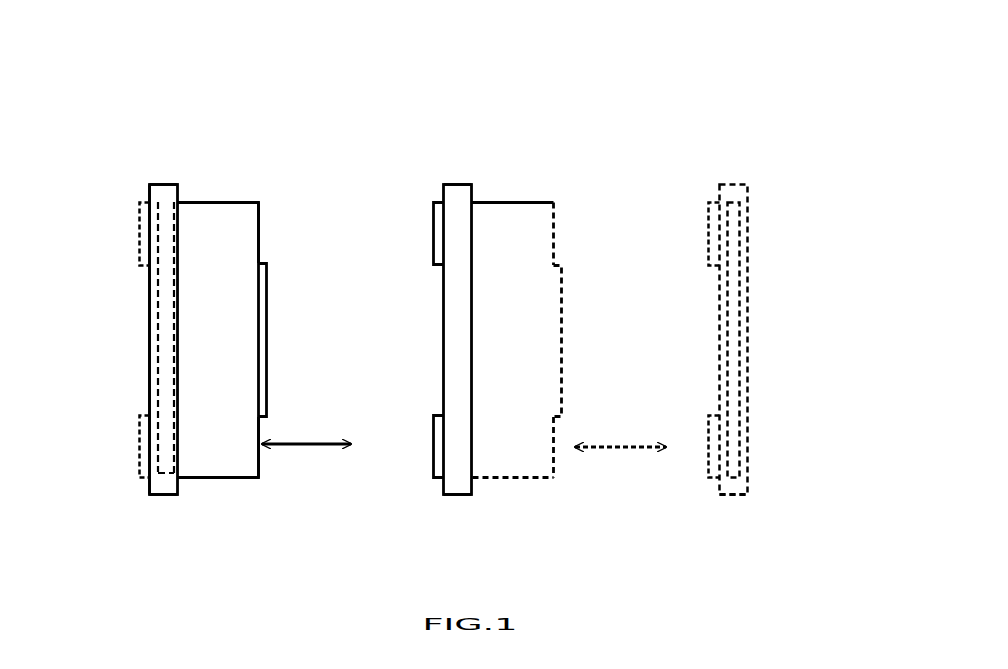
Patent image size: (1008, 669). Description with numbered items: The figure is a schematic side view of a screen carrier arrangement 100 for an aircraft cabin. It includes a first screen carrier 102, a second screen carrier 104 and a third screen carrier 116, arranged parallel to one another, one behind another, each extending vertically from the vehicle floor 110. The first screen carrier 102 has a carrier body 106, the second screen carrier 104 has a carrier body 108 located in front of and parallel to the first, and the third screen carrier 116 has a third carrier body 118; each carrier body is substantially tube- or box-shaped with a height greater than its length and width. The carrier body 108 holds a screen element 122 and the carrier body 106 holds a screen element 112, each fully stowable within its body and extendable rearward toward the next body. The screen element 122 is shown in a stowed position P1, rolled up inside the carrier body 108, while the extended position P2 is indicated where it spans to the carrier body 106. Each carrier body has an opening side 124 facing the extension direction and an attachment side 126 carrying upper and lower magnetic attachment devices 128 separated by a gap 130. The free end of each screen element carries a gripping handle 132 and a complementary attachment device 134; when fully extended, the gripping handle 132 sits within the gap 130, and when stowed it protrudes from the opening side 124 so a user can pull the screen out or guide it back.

The screen carrier arrangement 100 is at (568, 96).
The first screen carrier 102 is at (463, 145).
The second screen carrier 104 is at (155, 138).
The carrier body 106 is at (474, 196).
The carrier body 108 is at (147, 340).
The vehicle floor 110 is at (834, 493).
The screen element 112 is at (520, 213).
The third screen carrier 116 is at (745, 147).
The third carrier body 118 is at (750, 280).
The screen element 122 is at (215, 220).
The opening side 124 is at (181, 447).
The attachment side 126 is at (148, 488).
The magnetic attachment device 128 is at (426, 205).
The gap 130 is at (424, 320).
The gripping handle 132 is at (268, 327).
The attachment device 134 is at (260, 232).
The stowed position P1 is at (178, 185).
The extended position P2 is at (334, 190).